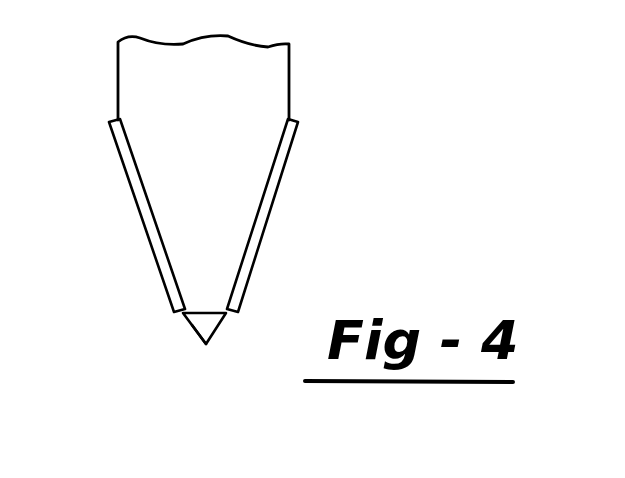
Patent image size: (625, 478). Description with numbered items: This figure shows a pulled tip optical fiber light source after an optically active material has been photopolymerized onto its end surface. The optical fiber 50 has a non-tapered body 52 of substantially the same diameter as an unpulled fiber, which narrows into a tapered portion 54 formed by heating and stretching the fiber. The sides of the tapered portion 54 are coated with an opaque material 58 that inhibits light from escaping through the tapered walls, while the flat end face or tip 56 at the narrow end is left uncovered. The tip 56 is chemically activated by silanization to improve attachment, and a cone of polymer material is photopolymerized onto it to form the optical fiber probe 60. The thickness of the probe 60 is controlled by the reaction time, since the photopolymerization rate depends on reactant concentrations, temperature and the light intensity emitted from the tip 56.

The optical fiber 50 is at (342, 122).
The body 52 is at (292, 76).
The tapered portion 54 is at (272, 172).
The optical fiber tip 56 is at (210, 313).
The opaque material 58 is at (150, 238).
The optical fiber probe 60 is at (193, 326).